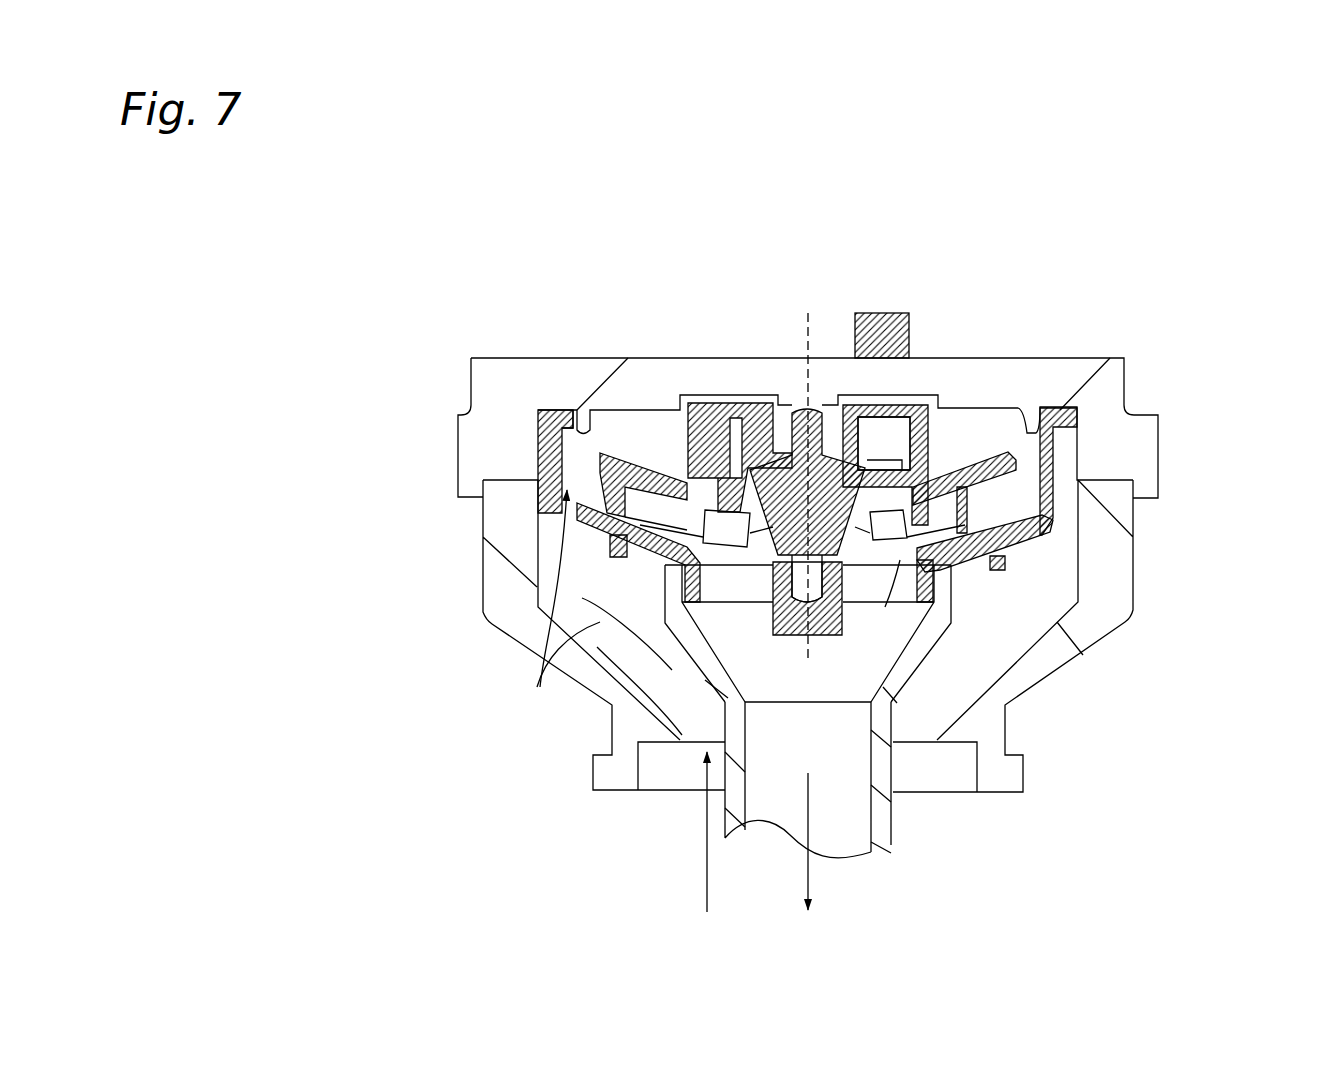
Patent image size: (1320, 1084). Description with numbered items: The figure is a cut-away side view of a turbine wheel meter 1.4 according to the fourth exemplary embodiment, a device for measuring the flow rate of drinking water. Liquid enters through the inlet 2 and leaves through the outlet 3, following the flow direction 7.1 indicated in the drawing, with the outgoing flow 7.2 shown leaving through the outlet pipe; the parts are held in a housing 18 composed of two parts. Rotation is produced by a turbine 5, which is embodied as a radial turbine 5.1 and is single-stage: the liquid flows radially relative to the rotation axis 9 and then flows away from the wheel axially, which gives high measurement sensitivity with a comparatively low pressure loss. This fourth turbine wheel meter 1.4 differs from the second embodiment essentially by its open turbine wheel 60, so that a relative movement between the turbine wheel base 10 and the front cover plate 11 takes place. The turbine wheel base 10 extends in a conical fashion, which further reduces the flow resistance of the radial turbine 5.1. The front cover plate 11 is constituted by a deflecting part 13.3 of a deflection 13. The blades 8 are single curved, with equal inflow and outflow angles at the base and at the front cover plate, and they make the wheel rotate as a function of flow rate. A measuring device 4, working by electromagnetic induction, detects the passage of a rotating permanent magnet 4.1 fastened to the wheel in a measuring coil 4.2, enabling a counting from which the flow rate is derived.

The turbine wheel meter 1.4 is at (460, 338).
The housing 18 is at (575, 408).
The rotation axis 9 is at (802, 325).
The inlet 2 is at (665, 794).
The outlet 3 is at (849, 809).
The flow direction 7.1 is at (705, 898).
The outlet flow 7.2 is at (812, 880).
The measuring device 4 is at (892, 428).
The permanent magnet 4.1 is at (880, 425).
The measuring coil 4.2 is at (877, 332).
The open turbine wheel 60 is at (989, 452).
The deflection 13 is at (1053, 470).
The deflecting part 13.3 is at (1050, 548).
The front cover plate 11 is at (983, 560).
The turbine 5 is at (476, 493).
The radial turbine 5.1 is at (586, 487).
The turbine wheel base 10 is at (657, 477).
The blades 8 is at (725, 540).